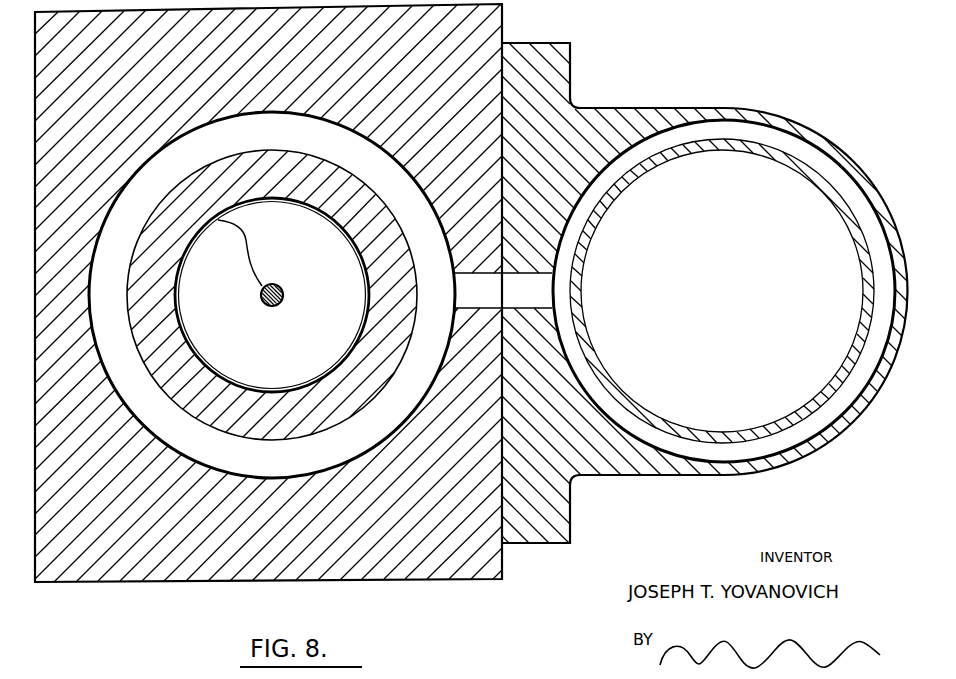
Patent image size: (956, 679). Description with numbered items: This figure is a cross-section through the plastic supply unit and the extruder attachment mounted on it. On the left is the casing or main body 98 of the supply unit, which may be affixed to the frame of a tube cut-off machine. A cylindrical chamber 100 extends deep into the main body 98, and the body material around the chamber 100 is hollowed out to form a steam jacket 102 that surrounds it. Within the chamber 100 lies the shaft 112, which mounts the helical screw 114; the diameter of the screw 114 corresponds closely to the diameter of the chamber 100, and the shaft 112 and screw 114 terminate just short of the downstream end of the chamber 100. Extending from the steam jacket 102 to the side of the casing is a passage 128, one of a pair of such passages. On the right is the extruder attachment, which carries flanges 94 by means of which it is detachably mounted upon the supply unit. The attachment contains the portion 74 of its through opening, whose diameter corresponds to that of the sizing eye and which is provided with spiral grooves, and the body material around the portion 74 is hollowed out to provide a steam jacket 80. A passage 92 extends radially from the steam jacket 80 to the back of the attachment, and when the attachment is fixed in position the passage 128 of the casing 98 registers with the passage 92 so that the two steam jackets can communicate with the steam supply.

The main body 98 is at (115, 107).
The flanges 94 is at (555, 43).
The portion of the opening 74 is at (830, 204).
The steam jacket 80 is at (815, 412).
The shaft 112 is at (282, 287).
The helical screw 114 is at (245, 242).
The cylindrical chamber 100 is at (313, 383).
The steam jacket 102 is at (193, 443).
The passage 128 is at (475, 296).
The passage 92 is at (525, 297).